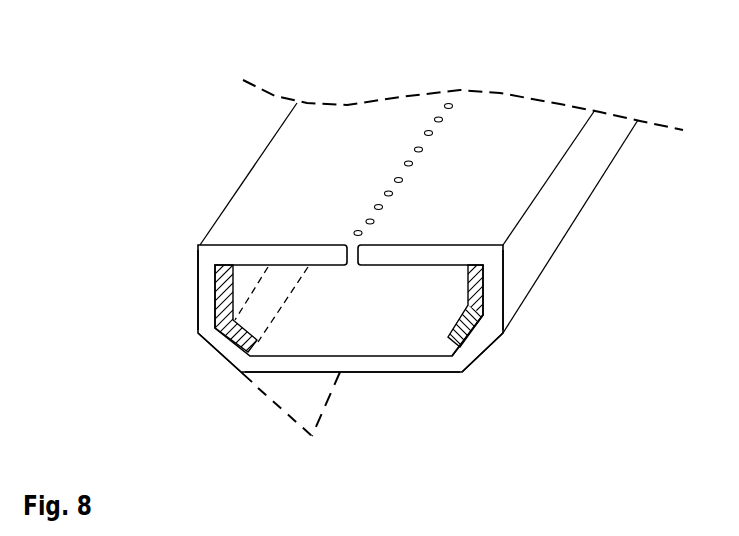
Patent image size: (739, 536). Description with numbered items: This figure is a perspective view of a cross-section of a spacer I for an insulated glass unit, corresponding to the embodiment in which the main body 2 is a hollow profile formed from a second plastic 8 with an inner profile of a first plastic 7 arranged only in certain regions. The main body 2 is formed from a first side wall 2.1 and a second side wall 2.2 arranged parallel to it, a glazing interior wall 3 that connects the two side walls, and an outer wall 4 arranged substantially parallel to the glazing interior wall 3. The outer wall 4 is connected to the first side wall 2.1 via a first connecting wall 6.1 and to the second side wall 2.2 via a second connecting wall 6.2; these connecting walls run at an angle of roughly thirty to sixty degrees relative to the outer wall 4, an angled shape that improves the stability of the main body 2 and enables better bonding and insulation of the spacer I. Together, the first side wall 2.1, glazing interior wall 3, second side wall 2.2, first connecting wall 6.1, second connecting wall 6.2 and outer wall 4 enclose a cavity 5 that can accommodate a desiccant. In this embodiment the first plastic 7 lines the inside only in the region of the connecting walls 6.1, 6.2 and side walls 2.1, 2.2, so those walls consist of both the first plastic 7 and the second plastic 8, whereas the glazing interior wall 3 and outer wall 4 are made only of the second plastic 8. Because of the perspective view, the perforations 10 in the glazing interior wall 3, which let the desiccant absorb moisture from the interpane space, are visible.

The spacer I is at (152, 84).
The main body 2 is at (221, 258).
The first side wall 2.1 is at (196, 281).
The second side wall 2.2 is at (550, 213).
The glazing interior wall 3 is at (313, 161).
The outer wall 4 is at (428, 373).
The cavity 5 is at (422, 308).
The first connecting wall 6.1 is at (217, 357).
The second connecting wall 6.2 is at (484, 352).
The first plastic 7 is at (217, 300).
The second plastic 8 is at (465, 360).
The perforations 10 is at (412, 162).